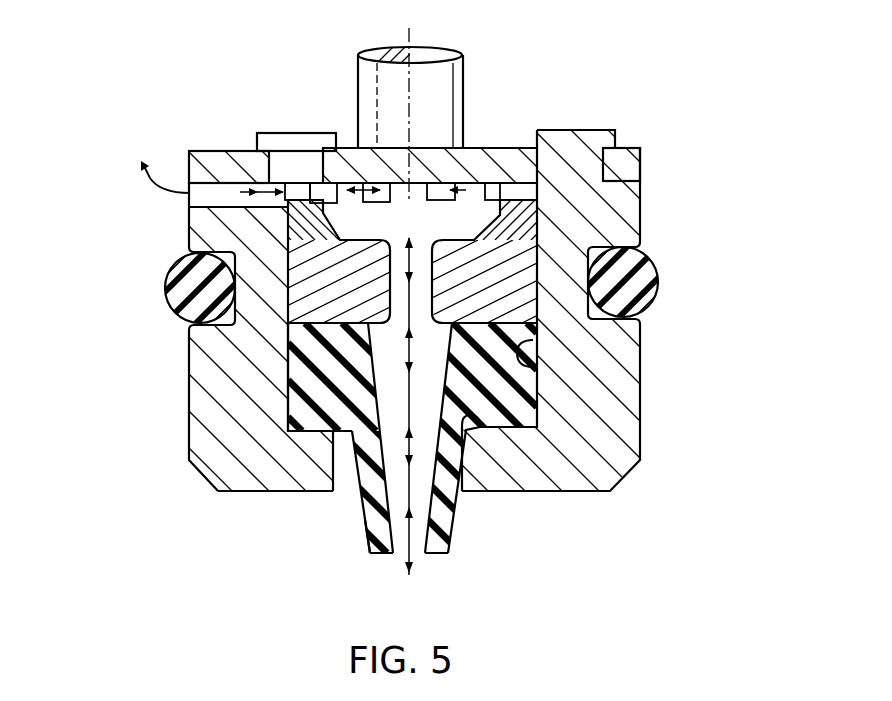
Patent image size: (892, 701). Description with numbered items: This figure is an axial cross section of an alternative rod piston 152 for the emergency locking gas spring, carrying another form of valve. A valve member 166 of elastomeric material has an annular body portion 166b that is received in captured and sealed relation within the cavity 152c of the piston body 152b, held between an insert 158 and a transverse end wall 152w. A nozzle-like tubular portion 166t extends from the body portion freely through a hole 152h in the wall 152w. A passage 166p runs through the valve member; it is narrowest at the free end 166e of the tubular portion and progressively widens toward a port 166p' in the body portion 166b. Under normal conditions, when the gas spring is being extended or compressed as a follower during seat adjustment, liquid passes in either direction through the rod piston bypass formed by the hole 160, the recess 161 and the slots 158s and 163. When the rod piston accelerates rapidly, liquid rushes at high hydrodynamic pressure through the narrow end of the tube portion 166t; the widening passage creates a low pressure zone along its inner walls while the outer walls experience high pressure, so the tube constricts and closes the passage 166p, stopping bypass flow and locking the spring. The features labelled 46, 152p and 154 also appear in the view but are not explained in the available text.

The fastener bolt 46 is at (448, 85).
The rod piston 152 is at (200, 106).
The piston body 152b is at (642, 200).
The cavity 152c is at (455, 380).
The hole 152h is at (467, 490).
The nozzle body projection 152p is at (628, 158).
The transverse end wall 152w is at (288, 455).
The O-ring seal 154 is at (175, 298).
The insert 158 is at (506, 245).
The slots 158s is at (437, 187).
The hole 160 is at (432, 282).
The recess 161 is at (452, 235).
The slot 163 is at (213, 200).
The valve member 166 is at (472, 525).
The annular body portion 166b is at (288, 390).
The free end 166e is at (438, 557).
The passage 166p is at (289, 516).
The port 166p' is at (576, 438).
The nozzle-like tubular portion 166t is at (367, 520).